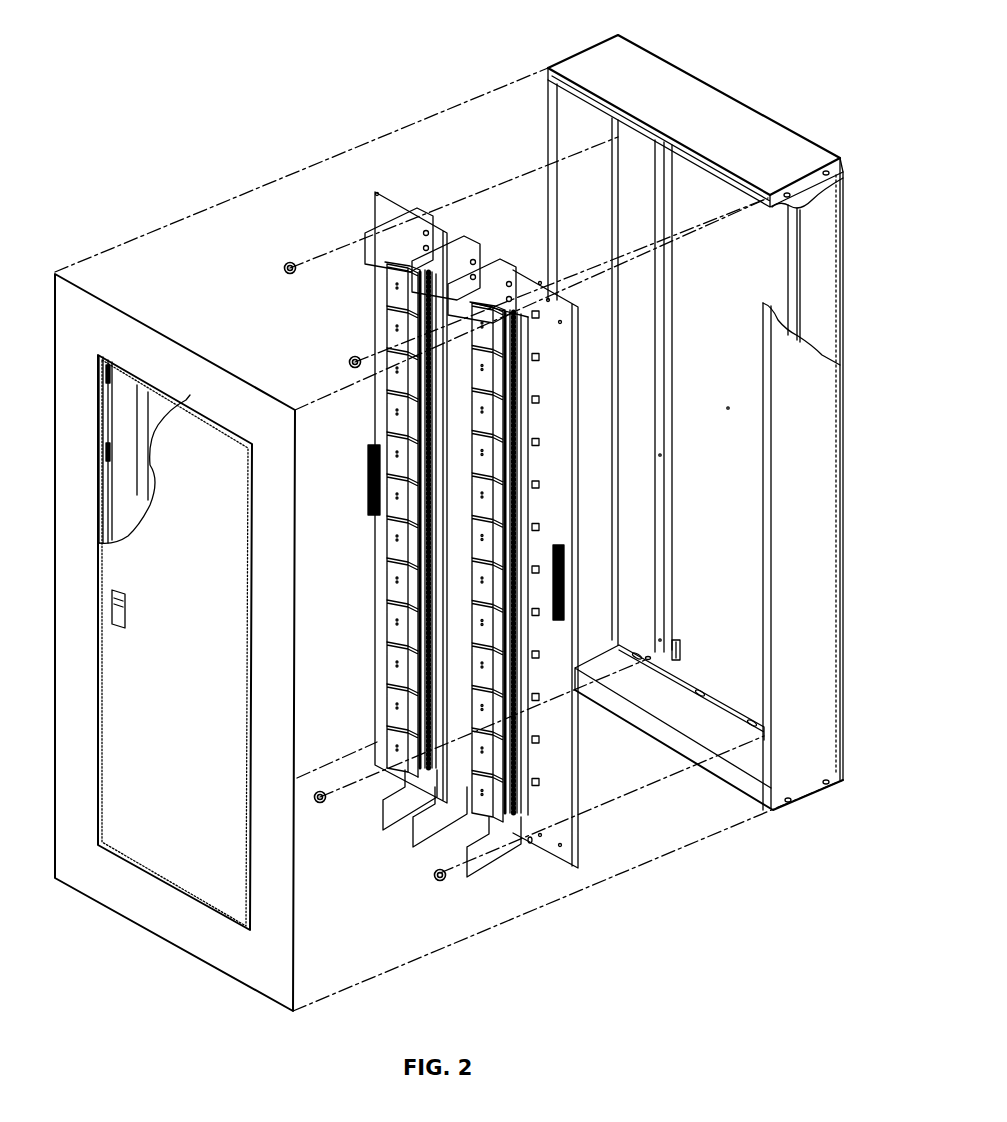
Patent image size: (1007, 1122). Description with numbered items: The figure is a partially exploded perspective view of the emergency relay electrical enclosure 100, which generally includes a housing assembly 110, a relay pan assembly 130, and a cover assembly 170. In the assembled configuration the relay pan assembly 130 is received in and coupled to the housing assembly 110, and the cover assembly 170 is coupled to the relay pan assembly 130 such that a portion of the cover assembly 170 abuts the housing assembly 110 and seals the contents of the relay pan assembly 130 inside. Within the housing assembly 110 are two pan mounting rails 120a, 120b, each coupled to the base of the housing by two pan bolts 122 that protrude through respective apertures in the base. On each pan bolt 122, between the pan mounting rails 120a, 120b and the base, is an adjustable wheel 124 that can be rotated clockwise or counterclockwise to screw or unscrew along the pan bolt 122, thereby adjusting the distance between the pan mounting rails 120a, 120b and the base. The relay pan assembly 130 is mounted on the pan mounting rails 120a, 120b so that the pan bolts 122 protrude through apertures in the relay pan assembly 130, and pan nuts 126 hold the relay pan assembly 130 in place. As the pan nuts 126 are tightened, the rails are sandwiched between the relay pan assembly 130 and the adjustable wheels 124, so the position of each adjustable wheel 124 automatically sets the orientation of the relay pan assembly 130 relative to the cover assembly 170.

The emergency relay electrical enclosure 100 is at (774, 36).
The housing assembly 110 is at (724, 118).
The pan mounting rail 120a is at (670, 530).
The pan mounting rail 120b is at (805, 290).
The pan bolt 122 is at (650, 660).
The adjustable wheel 124 is at (686, 648).
The pan nut 126 is at (288, 264).
The relay pan assembly 130 is at (411, 194).
The cover assembly 170 is at (88, 874).